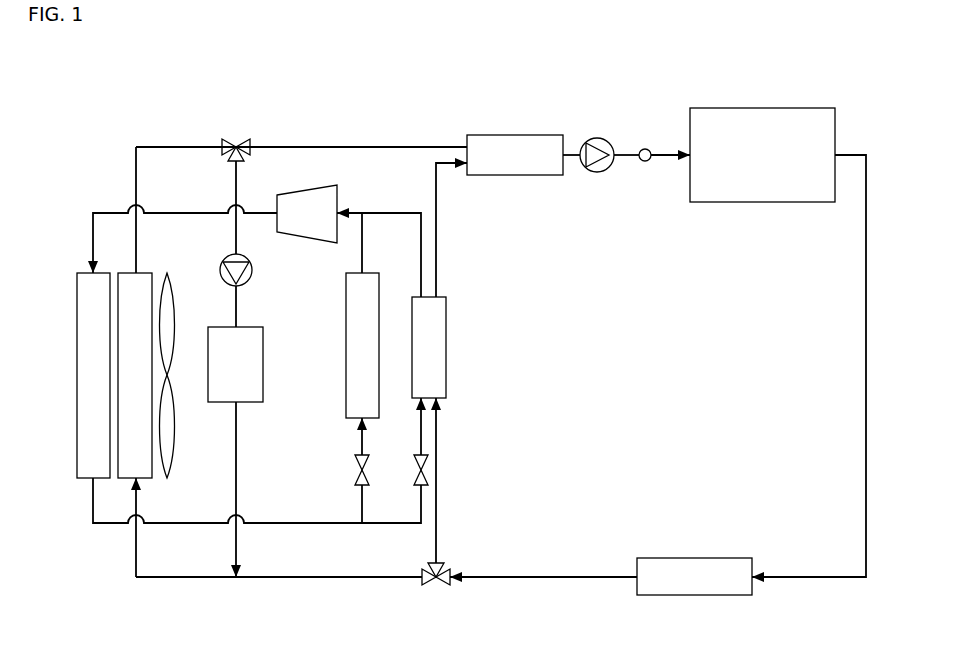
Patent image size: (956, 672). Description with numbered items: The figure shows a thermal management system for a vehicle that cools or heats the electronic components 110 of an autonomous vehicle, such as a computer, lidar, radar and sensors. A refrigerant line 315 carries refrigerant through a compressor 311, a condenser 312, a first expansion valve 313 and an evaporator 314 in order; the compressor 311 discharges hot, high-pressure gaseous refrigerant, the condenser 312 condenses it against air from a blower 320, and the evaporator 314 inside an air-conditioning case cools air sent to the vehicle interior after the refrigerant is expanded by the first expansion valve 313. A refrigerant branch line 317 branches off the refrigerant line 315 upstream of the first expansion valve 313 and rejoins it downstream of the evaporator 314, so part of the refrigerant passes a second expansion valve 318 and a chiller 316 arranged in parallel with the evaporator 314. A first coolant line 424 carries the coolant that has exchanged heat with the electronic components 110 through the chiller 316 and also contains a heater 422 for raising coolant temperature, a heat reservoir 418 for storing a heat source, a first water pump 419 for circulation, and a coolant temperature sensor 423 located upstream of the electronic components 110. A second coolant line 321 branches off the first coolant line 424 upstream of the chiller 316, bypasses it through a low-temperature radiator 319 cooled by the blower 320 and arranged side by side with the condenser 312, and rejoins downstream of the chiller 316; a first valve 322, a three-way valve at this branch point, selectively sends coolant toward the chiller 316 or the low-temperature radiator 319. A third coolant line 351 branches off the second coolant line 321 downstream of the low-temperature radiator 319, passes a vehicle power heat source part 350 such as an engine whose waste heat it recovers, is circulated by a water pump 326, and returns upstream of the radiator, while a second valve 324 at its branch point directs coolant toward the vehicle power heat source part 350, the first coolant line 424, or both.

The electronic components 110 is at (765, 108).
The compressor 311 is at (307, 190).
The condenser 312 is at (90, 481).
The first expansion valve 313 is at (355, 463).
The evaporator 314 is at (345, 350).
The refrigerant line 315 is at (183, 212).
The chiller 316 is at (447, 350).
The refrigerant branch line 317 is at (380, 524).
The second expansion valve 318 is at (428, 463).
The low-temperature radiator 319 is at (144, 481).
The blower 320 is at (178, 462).
The second coolant line 321 is at (278, 578).
The first valve 322 is at (436, 588).
The second valve 324 is at (240, 140).
The water pump 326 is at (247, 287).
The vehicle power heat source part 350 is at (246, 404).
The third coolant line 351 is at (237, 500).
The heat reservoir 418 is at (697, 596).
The first water pump 419 is at (594, 138).
The heater 422 is at (514, 134).
The coolant temperature sensor 423 is at (647, 149).
The first coolant line 424 is at (865, 366).